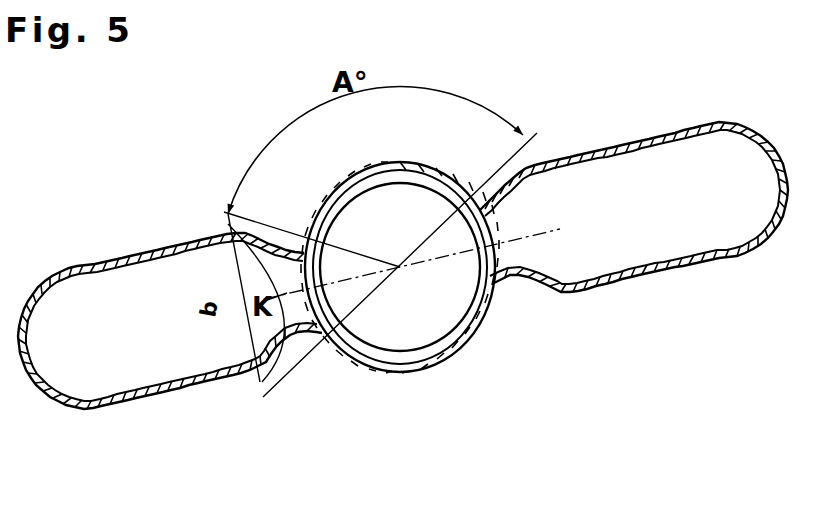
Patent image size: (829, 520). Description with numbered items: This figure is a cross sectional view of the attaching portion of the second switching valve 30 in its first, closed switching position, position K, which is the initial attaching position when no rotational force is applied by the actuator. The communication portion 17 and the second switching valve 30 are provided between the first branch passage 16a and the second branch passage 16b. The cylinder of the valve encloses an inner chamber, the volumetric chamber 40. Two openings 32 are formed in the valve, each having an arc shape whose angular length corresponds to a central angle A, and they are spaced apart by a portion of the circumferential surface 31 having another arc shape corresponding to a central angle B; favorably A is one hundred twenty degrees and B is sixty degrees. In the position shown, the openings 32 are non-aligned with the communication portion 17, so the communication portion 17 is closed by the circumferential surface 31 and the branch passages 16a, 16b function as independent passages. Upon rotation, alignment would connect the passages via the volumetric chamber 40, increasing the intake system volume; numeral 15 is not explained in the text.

The wing nut body 15 is at (397, 373).
The first branch passage 16a is at (178, 357).
The second branch passage 16b is at (655, 242).
The communication portion 17 is at (510, 263).
The second switching valve 30 is at (450, 357).
The circumferential surface 31 is at (233, 213).
The openings 32 is at (430, 163).
The volumetric chamber 40 is at (400, 267).